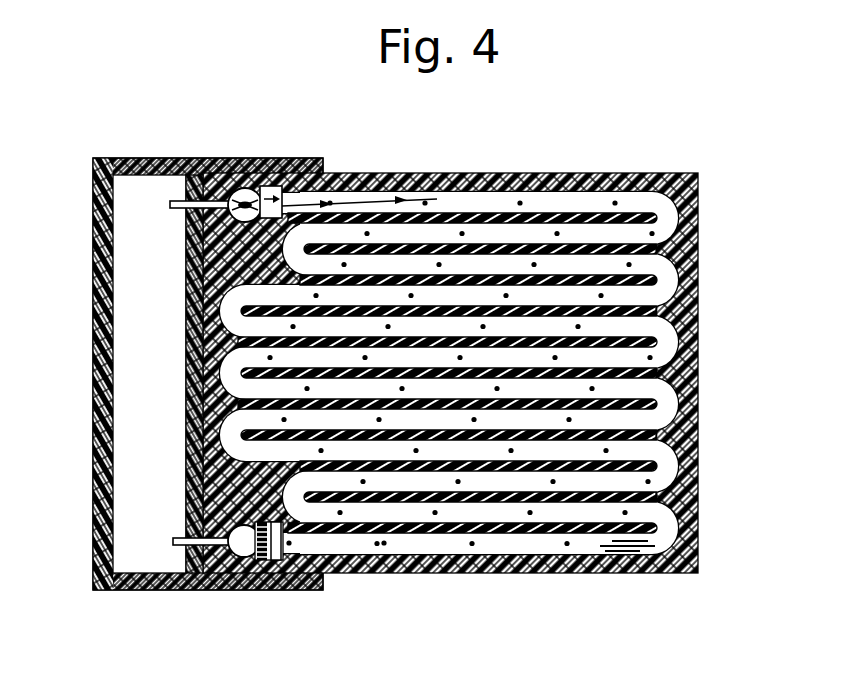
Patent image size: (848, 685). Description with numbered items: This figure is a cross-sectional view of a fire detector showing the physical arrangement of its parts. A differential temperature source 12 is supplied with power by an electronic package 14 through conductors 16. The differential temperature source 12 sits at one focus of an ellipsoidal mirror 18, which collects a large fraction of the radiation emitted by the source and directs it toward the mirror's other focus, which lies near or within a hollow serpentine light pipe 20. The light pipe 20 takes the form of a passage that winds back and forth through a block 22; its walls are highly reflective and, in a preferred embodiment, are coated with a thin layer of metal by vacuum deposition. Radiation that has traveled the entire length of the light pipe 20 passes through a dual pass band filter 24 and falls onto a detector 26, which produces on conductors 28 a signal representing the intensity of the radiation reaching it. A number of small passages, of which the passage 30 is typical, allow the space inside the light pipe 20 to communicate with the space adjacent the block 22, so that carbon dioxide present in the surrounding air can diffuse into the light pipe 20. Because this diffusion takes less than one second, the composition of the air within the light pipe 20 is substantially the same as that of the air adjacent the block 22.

The differential temperature source 12 is at (262, 188).
The electronic package 14 is at (128, 313).
The conductors 16 is at (182, 201).
The ellipsoidal mirror 18 is at (237, 188).
The hollow serpentine light pipe 20 is at (370, 190).
The block 22 is at (700, 195).
The dual pass band filter 24 is at (304, 578).
The detector 26 is at (266, 588).
The conductors 28 is at (177, 547).
The passage 30 is at (652, 546).